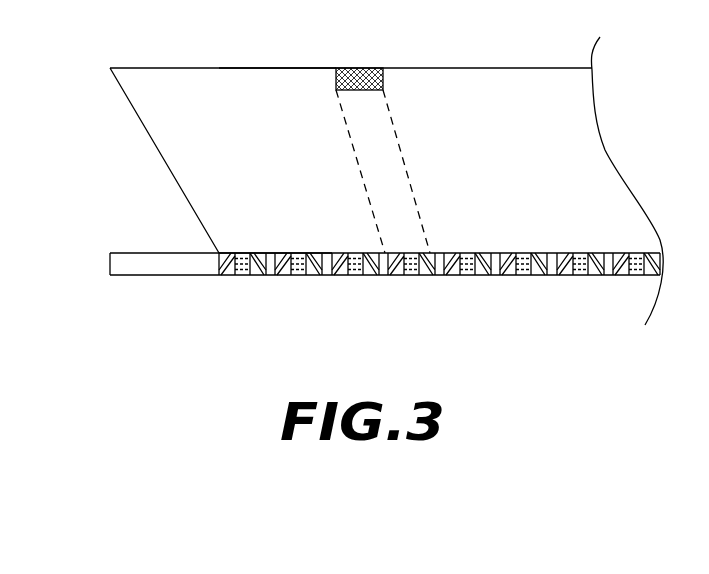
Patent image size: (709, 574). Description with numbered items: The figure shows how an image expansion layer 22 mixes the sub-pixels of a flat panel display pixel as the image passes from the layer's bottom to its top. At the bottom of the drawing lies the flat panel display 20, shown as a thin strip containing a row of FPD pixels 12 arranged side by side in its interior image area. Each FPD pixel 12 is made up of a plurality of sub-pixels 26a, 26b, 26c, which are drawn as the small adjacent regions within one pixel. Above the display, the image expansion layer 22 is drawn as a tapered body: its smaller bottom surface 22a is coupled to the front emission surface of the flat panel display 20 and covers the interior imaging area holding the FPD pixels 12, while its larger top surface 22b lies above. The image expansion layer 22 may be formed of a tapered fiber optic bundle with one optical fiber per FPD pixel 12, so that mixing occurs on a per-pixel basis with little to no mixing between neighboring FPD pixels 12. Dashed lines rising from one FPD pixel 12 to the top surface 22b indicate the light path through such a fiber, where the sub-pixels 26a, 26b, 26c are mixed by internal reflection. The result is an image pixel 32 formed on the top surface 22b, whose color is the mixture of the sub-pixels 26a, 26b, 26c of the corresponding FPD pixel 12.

The flat panel display 20 is at (90, 265).
The FPD pixel 12 is at (467, 287).
The image expansion layer 22 is at (165, 162).
The bottom surface 22a is at (342, 262).
The top surface 22b is at (282, 62).
The image pixel 32 is at (362, 68).
The sub-pixel 26a is at (397, 275).
The sub-pixel 26b is at (413, 275).
The sub-pixel 26c is at (425, 275).